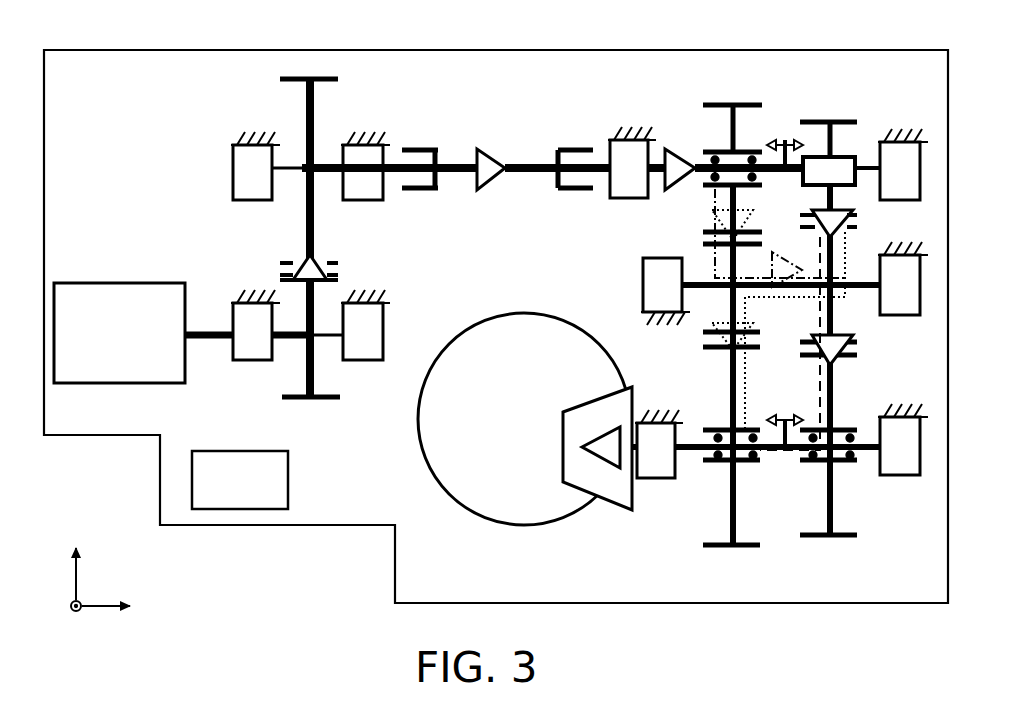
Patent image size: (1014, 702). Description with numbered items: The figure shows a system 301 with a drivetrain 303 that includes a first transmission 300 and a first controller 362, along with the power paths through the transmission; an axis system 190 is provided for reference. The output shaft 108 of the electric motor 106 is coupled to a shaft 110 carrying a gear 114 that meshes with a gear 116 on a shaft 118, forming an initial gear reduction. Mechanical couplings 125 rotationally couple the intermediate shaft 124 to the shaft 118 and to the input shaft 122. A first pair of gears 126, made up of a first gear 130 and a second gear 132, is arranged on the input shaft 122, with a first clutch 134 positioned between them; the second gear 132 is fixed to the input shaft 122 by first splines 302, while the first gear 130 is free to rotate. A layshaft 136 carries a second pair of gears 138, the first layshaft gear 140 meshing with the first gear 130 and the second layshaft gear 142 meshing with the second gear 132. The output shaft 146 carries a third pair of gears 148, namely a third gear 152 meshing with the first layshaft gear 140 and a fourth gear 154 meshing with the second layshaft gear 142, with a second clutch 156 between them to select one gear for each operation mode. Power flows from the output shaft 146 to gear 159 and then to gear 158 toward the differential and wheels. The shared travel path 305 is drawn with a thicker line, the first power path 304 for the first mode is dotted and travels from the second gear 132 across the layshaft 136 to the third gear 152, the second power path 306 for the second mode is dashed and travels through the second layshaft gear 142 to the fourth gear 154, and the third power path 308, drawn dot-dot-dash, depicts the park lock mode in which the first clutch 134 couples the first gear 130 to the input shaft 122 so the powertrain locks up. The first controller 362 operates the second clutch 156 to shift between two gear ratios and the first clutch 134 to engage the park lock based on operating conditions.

The first transmission 300 is at (126, 110).
The system 301 is at (46, 50).
The drivetrain 303 is at (84, 100).
The electric motor 106 is at (56, 283).
The output shaft 108 is at (213, 355).
The shaft 110 is at (333, 238).
The gear 114 is at (326, 400).
The gear 116 is at (328, 79).
The shaft 118 is at (287, 172).
The input shaft 122 is at (777, 172).
The intermediate shaft 124 is at (524, 194).
The mechanical couplings 125 is at (410, 190).
The first pair of gears 126 is at (680, 100).
The first gear 130 is at (708, 105).
The second gear 132 is at (803, 122).
The first clutch 134 is at (786, 132).
The layshaft 136 is at (730, 288).
The second pair of gears 138 is at (690, 340).
The first layshaft gear 140 is at (730, 274).
The second layshaft gear 142 is at (835, 330).
The output shaft 146 is at (800, 452).
The third pair of gears 148 is at (682, 562).
The third gear 152 is at (725, 548).
The fourth gear 154 is at (850, 540).
The second clutch 156 is at (785, 412).
The gear 158 is at (532, 527).
The gear 159 is at (617, 510).
The axis system 190 is at (104, 583).
The first splines 302 is at (855, 157).
The first power path 304 is at (848, 248).
The shared travel path 305 is at (315, 222).
The second power path 306 is at (835, 362).
The third power path 308 is at (715, 200).
The first controller 362 is at (240, 480).